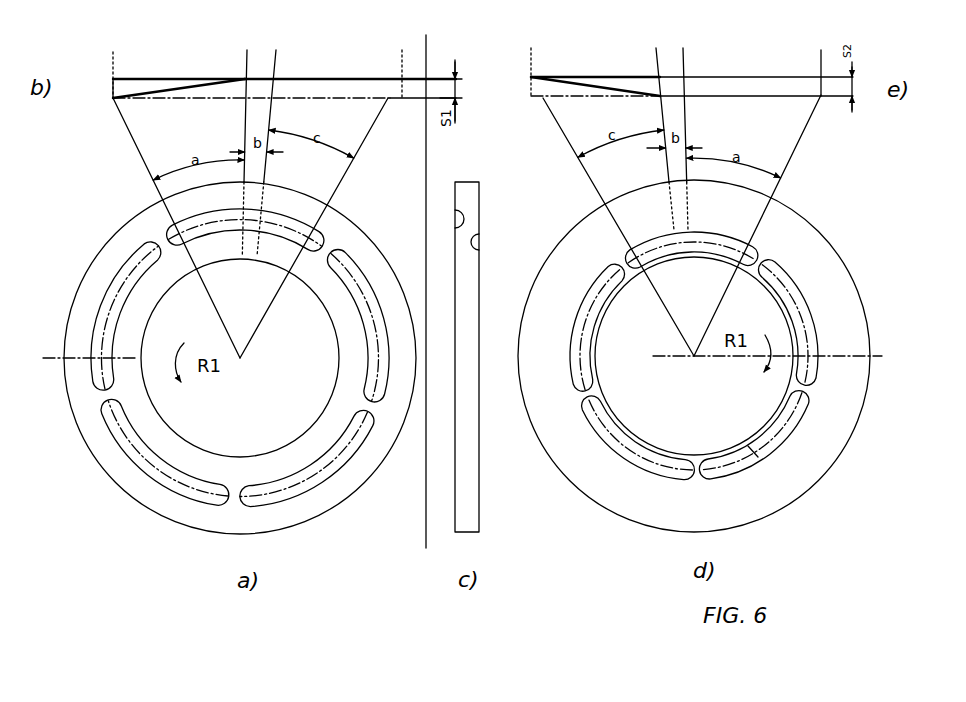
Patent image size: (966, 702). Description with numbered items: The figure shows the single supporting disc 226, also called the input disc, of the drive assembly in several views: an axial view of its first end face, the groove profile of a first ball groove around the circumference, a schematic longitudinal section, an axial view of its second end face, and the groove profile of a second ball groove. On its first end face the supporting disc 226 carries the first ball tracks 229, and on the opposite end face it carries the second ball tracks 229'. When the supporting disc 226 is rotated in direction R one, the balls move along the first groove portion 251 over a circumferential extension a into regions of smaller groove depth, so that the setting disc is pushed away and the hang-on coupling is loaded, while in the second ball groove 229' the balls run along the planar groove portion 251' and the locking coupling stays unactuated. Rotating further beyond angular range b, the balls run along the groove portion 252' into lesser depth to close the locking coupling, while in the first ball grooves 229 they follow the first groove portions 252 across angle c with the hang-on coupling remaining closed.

The supporting disc 226 is at (68, 249).
The first ball tracks 229 is at (273, 337).
The second ball tracks 229' is at (698, 348).
The first groove portion 251 is at (179, 58).
The first groove portion 252 is at (284, 58).
The planar groove portion 251' is at (756, 57).
The groove portion 252' is at (595, 57).